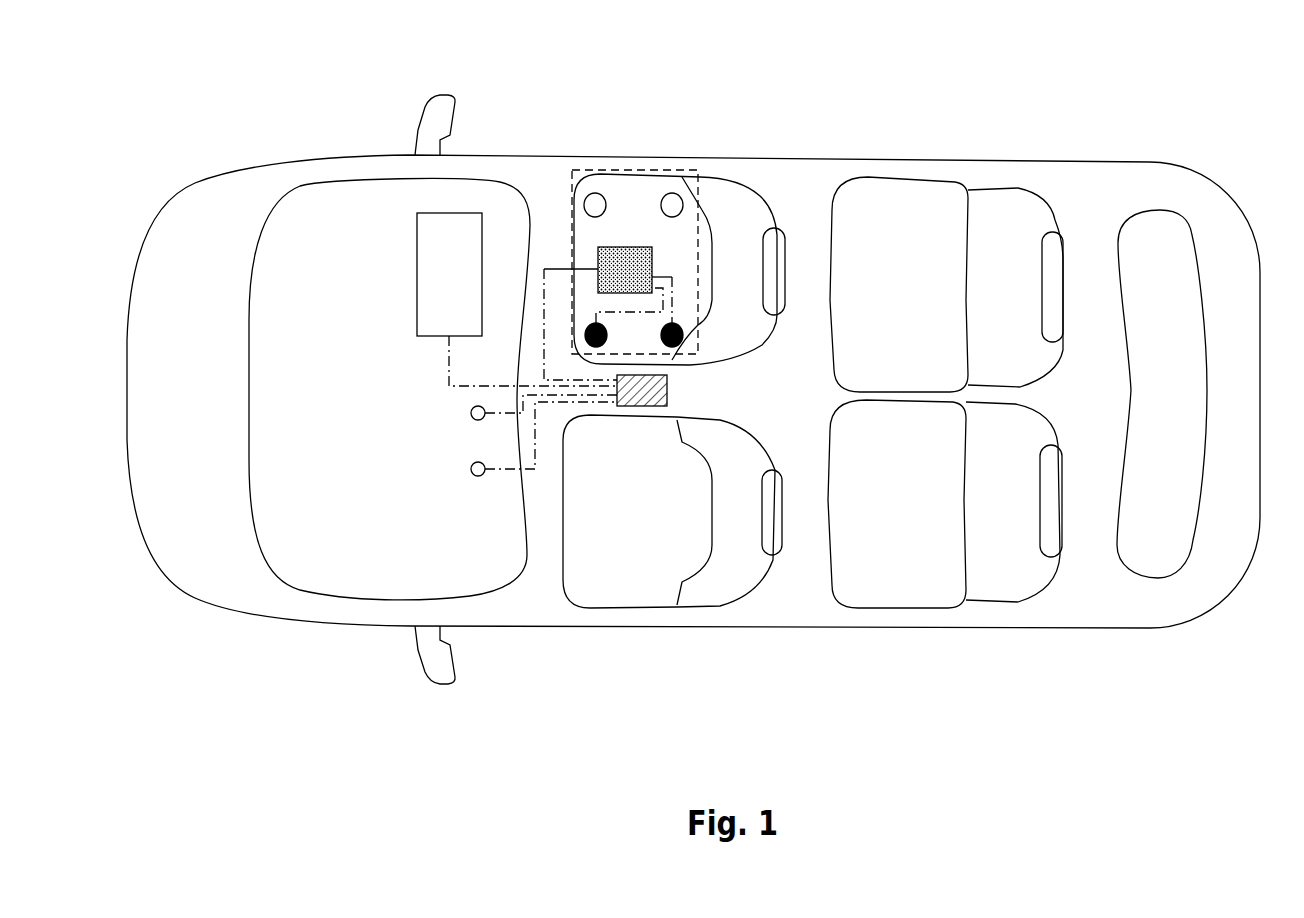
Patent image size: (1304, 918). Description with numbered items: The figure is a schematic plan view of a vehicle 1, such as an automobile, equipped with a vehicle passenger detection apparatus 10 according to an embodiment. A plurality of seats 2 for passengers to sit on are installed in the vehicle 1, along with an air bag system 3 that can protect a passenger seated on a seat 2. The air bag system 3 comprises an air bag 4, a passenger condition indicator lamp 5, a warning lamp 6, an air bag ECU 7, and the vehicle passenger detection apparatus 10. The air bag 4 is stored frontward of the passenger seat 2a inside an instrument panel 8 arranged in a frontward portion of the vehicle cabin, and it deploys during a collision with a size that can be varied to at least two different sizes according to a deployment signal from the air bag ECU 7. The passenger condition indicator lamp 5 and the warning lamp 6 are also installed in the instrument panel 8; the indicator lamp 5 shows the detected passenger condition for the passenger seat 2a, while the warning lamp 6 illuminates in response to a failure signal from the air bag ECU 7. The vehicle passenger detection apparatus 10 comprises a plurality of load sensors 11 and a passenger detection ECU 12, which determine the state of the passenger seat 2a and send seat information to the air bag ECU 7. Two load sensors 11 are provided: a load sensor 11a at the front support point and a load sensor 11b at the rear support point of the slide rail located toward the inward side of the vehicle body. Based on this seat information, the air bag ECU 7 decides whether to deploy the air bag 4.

The vehicle 1 is at (277, 153).
The seat 2 is at (813, 372).
The passenger seat 2a is at (763, 190).
The air bag system 3 is at (531, 178).
The air bag 4 is at (466, 212).
The passenger condition indicator lamp 5 is at (471, 413).
The warning lamp 6 is at (471, 469).
The air bag ECU 7 is at (667, 390).
The instrument panel 8 is at (360, 582).
The vehicle passenger detection apparatus 10 is at (700, 228).
The load sensor 11 is at (683, 244).
The load sensor 11a is at (588, 327).
The load sensor 11b is at (683, 340).
The passenger detection ECU 12 is at (634, 240).